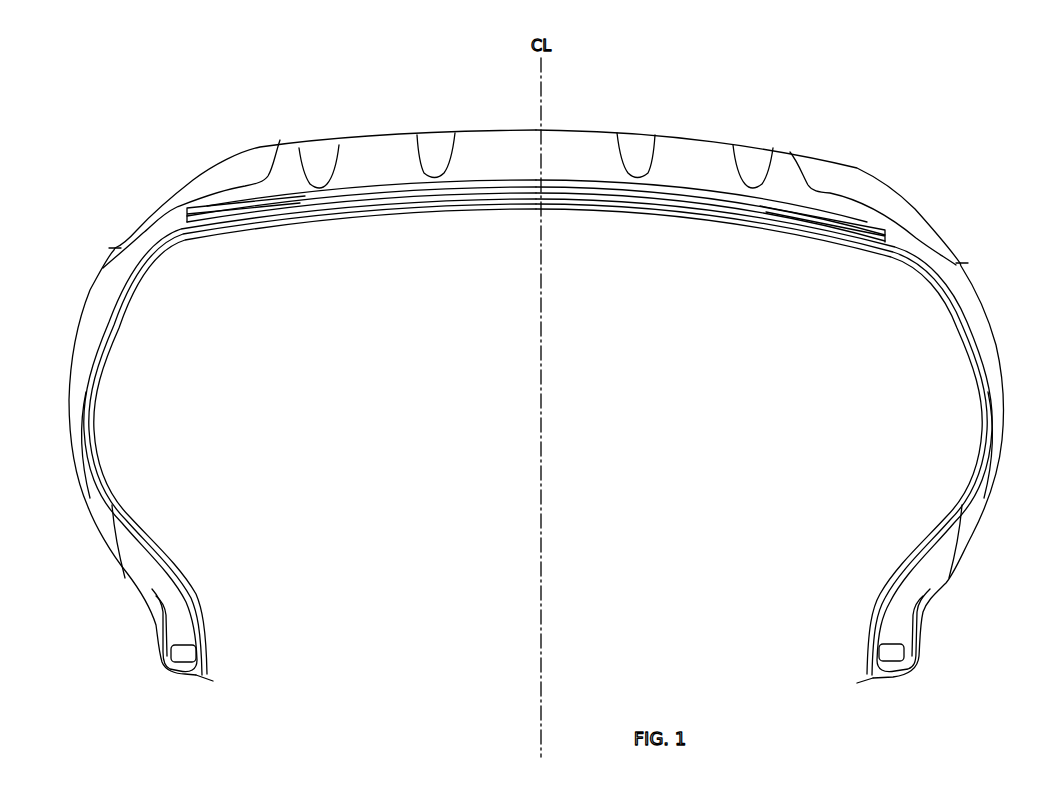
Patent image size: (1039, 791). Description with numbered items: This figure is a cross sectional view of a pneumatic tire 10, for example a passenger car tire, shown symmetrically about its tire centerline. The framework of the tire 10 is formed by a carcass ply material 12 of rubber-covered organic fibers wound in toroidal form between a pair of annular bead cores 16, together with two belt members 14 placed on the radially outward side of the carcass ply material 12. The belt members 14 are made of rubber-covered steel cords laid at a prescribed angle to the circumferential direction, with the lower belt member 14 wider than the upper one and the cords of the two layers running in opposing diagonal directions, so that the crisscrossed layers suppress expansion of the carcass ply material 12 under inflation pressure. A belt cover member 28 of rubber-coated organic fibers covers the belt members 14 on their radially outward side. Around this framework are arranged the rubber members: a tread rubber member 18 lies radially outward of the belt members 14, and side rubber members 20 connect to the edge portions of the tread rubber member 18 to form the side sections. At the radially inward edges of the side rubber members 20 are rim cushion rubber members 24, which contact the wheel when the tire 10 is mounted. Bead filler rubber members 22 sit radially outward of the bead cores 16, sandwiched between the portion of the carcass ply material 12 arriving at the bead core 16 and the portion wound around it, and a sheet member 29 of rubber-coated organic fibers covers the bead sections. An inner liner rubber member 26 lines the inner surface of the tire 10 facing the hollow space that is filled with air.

The pneumatic tire 10 is at (854, 157).
The carcass ply material 12 is at (893, 258).
The belt member 14 is at (575, 198).
The bead core 16 is at (176, 657).
The tread rubber member 18 is at (292, 160).
The side rubber member 20 is at (967, 300).
The bead filler rubber member 22 is at (170, 597).
The rim cushion rubber member 24 is at (132, 577).
The inner liner rubber member 26 is at (772, 229).
The belt cover member 28 is at (307, 200).
The sheet member 29 is at (193, 678).